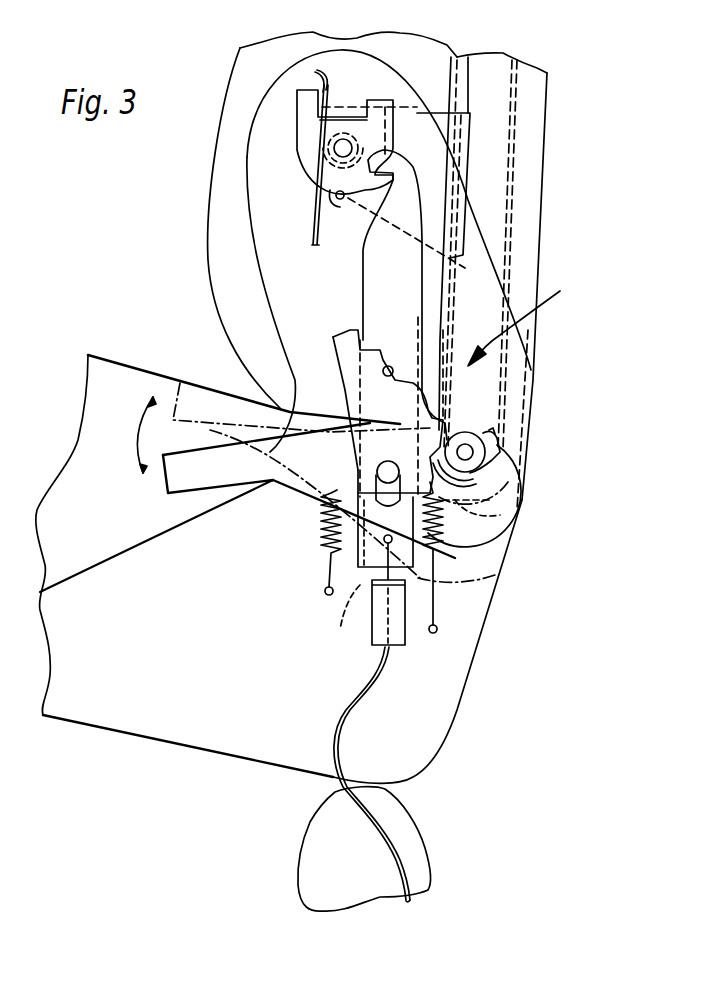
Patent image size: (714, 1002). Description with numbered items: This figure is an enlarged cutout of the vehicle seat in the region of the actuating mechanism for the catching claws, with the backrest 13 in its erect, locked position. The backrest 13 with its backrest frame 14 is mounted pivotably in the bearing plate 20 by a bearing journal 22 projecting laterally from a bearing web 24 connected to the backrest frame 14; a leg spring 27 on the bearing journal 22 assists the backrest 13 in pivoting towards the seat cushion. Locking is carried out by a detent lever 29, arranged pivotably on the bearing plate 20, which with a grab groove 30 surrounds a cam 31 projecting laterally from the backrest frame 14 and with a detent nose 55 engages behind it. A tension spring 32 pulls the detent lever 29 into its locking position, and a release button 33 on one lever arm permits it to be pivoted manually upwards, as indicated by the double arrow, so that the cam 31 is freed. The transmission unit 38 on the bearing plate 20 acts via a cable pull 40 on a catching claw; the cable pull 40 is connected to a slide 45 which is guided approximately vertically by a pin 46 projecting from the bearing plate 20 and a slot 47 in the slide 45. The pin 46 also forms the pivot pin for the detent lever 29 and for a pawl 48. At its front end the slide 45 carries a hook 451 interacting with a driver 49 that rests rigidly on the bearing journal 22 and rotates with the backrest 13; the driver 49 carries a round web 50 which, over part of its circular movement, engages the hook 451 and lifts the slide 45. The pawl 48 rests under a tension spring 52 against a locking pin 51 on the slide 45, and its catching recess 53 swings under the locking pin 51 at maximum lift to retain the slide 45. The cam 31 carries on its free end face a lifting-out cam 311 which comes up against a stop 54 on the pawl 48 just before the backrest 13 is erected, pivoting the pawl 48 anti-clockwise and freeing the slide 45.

The backrest 13 is at (222, 278).
The backrest frame 14 is at (513, 123).
The bearing plate 20 is at (440, 702).
The bearing journal 22 is at (348, 149).
The bearing web 24 is at (461, 123).
The leg spring 27 is at (312, 237).
The detent lever 29 is at (480, 565).
The grab groove 30 is at (485, 474).
The cam 31 is at (479, 461).
The lifting-out cam 311 is at (507, 526).
The tension spring 32 is at (320, 535).
The release button 33 is at (178, 473).
The transmission unit 38 is at (524, 322).
The cable pull 40 is at (343, 716).
The slide 45 is at (415, 218).
The hook 451 is at (397, 90).
The pin 46 is at (388, 472).
The slot 47 is at (356, 598).
The pawl 48 is at (353, 373).
The driver 49 is at (303, 120).
The round web 50 is at (336, 196).
The locking pin 51 is at (392, 368).
The tension spring 52 is at (475, 540).
The catching recess 53 is at (358, 327).
The stop 54 is at (447, 423).
The detent nose 55 is at (470, 452).